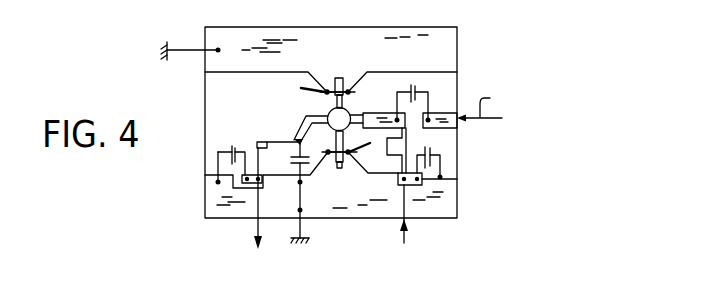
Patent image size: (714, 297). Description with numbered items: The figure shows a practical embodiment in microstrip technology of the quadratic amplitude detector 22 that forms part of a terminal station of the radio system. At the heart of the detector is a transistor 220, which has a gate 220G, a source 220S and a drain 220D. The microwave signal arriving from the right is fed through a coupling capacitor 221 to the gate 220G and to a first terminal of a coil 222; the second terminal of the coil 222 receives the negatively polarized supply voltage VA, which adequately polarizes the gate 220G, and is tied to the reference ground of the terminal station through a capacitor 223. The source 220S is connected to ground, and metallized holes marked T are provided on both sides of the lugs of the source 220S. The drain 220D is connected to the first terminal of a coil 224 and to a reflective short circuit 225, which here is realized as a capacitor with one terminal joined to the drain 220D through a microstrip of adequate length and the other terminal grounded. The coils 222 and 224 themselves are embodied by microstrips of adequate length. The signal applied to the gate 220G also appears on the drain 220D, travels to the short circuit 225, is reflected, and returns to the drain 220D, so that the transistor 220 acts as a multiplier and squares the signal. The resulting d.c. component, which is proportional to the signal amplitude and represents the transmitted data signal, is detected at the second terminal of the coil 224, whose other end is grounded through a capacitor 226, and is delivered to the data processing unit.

The amplitude detector 22 is at (518, 24).
The transistor 220 is at (305, 121).
The source 220S is at (338, 78).
The gate 220G is at (362, 112).
The drain 220D is at (305, 120).
The coupling capacitor 221 is at (415, 85).
The coil 222 is at (404, 135).
The capacitor 223 is at (432, 166).
The coil 224 is at (257, 143).
The reflective short circuit 225 is at (291, 160).
The capacitor 226 is at (218, 152).